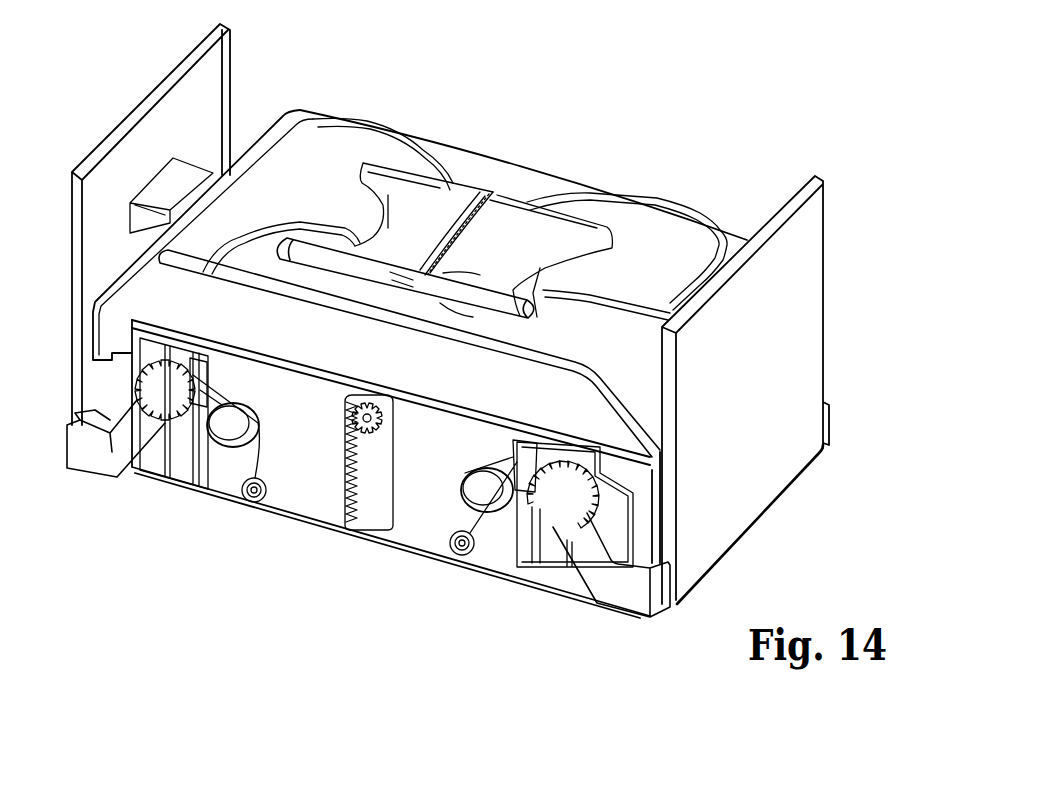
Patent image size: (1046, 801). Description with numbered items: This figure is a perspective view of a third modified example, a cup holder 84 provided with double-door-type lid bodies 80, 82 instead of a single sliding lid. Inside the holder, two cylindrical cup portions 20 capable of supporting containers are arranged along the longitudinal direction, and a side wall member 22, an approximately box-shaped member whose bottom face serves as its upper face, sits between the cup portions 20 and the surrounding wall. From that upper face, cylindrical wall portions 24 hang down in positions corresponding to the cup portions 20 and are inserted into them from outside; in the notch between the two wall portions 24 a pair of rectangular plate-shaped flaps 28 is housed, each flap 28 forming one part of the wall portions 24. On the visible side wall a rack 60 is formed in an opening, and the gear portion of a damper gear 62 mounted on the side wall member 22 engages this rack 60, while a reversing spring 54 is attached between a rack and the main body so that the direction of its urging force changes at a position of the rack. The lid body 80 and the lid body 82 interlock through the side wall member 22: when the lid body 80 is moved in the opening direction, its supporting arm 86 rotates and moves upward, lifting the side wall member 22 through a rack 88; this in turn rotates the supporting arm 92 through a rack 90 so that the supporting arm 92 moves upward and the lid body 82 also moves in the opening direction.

The cup portion 20 is at (243, 257).
The side wall member 22 is at (492, 168).
The wall portion 24 is at (340, 150).
The flap 28 is at (390, 250).
The reversing spring 54 is at (258, 418).
The rack 60 is at (373, 490).
The damper gear 62 is at (360, 456).
The lid body 80 is at (212, 70).
The lid body 82 is at (813, 220).
The cup holder 84 is at (745, 118).
The supporting arm 86 is at (105, 455).
The rack 88 is at (200, 392).
The rack 90 is at (513, 455).
The supporting arm 92 is at (587, 557).